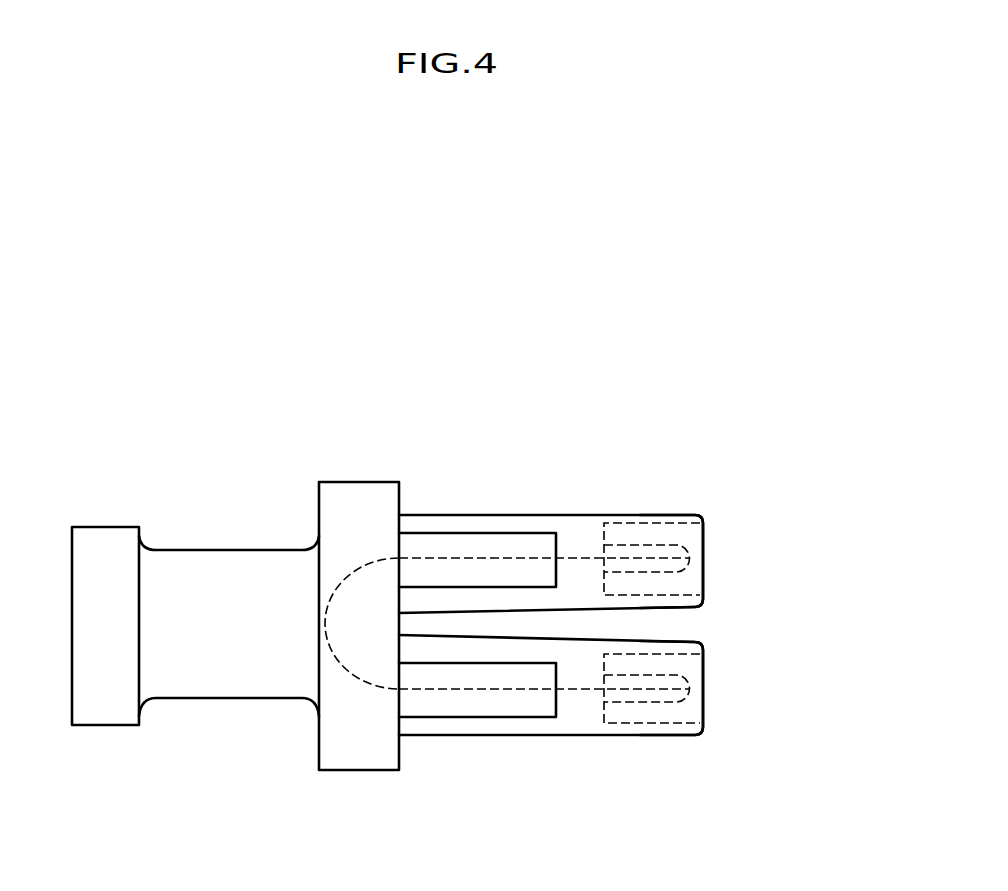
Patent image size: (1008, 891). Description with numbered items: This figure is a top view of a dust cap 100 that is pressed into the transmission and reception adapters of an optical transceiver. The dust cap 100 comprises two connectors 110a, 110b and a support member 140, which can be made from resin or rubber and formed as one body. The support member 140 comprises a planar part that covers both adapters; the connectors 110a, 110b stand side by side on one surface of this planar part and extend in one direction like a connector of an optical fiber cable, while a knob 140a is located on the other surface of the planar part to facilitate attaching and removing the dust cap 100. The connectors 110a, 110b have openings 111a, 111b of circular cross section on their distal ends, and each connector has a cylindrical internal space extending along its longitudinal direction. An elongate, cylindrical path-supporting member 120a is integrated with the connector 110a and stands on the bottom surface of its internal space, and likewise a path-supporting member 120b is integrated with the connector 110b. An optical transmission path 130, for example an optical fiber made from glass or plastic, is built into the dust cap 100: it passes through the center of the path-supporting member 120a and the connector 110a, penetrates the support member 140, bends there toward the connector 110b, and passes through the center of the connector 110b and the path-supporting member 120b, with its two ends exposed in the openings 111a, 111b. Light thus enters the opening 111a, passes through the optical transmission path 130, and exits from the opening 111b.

The dust cap 100 is at (724, 430).
The connector 110a is at (457, 730).
The connector 110b is at (462, 523).
The opening 111a is at (728, 694).
The opening 111b is at (728, 562).
The path-supporting member 120a is at (630, 702).
The path-supporting member 120b is at (640, 547).
The optical transmission path 130 is at (365, 560).
The support member 140 is at (357, 759).
The knob 140a is at (227, 683).